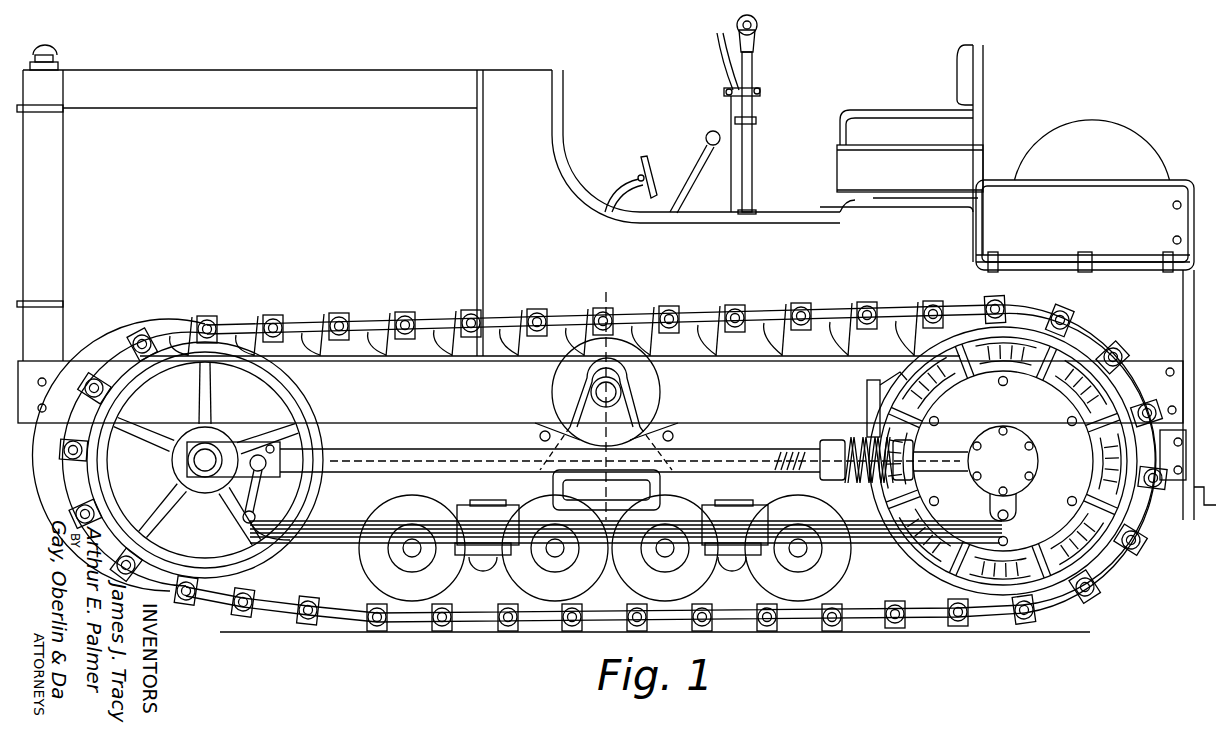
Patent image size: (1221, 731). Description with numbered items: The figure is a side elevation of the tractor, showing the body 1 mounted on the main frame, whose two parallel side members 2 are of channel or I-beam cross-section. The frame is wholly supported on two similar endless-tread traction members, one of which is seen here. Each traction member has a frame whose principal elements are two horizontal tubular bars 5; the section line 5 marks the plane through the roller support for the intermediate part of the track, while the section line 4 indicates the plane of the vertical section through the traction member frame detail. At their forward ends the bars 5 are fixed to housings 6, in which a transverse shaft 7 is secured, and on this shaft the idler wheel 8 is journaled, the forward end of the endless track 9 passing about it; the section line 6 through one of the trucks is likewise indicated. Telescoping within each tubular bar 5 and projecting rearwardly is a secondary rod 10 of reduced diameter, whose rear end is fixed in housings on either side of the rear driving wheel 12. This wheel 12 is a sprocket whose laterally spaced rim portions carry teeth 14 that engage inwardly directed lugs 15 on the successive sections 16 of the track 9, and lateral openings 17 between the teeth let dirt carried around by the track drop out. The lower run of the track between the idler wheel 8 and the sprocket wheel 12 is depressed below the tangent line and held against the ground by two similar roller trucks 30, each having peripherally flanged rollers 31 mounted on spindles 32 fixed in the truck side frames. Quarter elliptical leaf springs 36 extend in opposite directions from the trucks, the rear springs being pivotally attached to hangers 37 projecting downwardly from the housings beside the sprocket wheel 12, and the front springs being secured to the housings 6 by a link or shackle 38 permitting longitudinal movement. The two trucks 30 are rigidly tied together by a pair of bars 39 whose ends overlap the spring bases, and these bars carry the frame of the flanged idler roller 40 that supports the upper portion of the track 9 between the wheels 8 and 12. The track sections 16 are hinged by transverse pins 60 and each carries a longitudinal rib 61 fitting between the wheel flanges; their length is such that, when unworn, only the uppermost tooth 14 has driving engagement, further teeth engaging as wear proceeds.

The body 1 is at (562, 168).
The side members 2 is at (602, 418).
The section line 4— 4 is at (466, 478).
The tubular bars 5 is at (613, 296).
The housings 6 is at (237, 450).
The transverse shaft 7 is at (200, 463).
The idler wheel 8 is at (97, 472).
The endless track 9 is at (500, 318).
The secondary rod 10 is at (855, 440).
The driving wheel 12 is at (1104, 566).
The teeth 14 is at (896, 379).
The lugs 15 is at (430, 335).
The sections 16 is at (822, 336).
The lateral openings 17 is at (1037, 352).
The roller trucks 30 is at (442, 560).
The flanged rollers 31 is at (370, 510).
The spindles 32 is at (362, 552).
The quarter elliptical leaf spring 36 is at (290, 541).
The hangers 37 is at (1012, 500).
The link or shackle 38 is at (243, 505).
The bars 39 is at (548, 498).
The idler roller 40 is at (656, 388).
The transverse pins 60 is at (280, 311).
The rib 61 is at (307, 362).